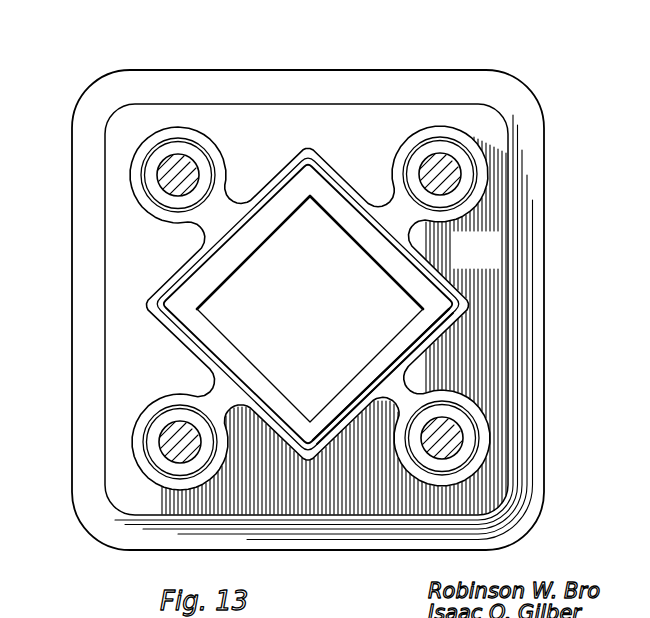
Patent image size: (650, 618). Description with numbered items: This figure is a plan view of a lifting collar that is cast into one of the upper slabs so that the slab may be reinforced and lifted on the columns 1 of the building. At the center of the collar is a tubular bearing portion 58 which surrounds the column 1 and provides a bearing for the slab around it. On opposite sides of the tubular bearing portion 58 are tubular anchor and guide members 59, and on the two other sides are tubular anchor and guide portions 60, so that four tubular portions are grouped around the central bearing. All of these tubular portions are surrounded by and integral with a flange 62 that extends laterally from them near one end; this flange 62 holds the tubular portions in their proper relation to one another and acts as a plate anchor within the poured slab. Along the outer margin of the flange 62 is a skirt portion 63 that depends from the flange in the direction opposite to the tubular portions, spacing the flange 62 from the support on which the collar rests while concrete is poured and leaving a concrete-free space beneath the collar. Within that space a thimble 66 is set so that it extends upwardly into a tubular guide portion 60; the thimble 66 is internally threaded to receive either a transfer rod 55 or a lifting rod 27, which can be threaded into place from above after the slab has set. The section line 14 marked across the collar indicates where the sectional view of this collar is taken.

The column 1 is at (240, 357).
The section line 14 is at (317, 314).
The lifting rod 27 is at (451, 181).
The transfer rod 55 is at (472, 432).
The tubular bearing portion 58 is at (441, 264).
The tubular anchor and guide member 59 is at (488, 155).
The tubular anchor and guide portion 60 is at (200, 128).
The flange 62 is at (494, 324).
The skirt portion 63 is at (80, 163).
The thimble 66 is at (473, 173).